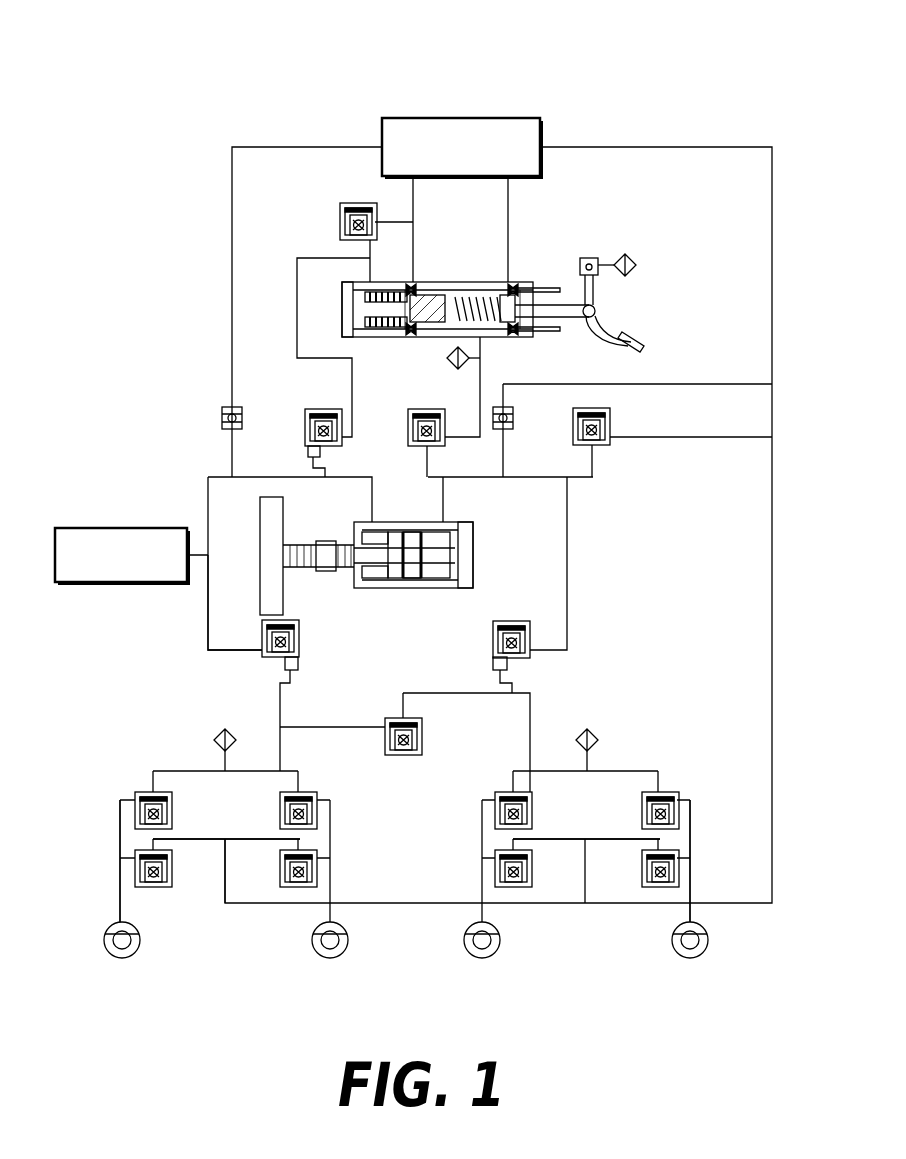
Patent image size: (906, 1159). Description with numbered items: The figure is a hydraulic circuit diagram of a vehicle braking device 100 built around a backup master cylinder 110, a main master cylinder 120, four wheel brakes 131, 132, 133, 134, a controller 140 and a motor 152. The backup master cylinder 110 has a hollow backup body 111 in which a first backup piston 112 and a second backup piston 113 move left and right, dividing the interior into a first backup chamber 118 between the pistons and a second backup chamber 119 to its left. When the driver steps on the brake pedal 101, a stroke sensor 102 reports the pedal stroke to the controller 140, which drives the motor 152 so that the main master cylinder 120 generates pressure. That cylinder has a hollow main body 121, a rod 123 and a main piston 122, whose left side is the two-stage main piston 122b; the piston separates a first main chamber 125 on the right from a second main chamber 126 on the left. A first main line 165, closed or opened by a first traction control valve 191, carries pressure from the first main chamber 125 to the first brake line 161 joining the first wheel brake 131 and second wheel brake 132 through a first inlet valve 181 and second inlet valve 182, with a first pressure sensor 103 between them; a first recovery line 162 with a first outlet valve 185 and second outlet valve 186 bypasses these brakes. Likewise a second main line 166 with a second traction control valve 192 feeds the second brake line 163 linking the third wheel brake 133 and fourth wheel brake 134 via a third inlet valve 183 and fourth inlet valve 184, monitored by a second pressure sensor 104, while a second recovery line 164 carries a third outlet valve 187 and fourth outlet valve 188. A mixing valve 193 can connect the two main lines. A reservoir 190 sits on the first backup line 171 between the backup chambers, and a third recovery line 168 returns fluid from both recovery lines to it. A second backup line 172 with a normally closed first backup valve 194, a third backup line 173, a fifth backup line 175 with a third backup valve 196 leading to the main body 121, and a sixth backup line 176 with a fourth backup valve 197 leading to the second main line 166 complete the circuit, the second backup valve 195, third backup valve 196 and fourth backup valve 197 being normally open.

The vehicle braking device 100 is at (154, 50).
The brake pedal 101 is at (604, 326).
The stroke sensor 102 is at (626, 254).
The first pressure sensor 103 is at (594, 734).
The second pressure sensor 104 is at (218, 730).
The backup master cylinder 110 is at (468, 267).
The backup body 111 is at (483, 295).
The first backup piston 112 is at (553, 296).
The second backup piston 113 is at (422, 294).
The first backup chamber 118 is at (460, 294).
The second backup chamber 119 is at (375, 292).
The main master cylinder 120 is at (446, 566).
The main body 121 is at (390, 530).
The main piston 122 is at (414, 532).
The two-stage main piston 122b is at (400, 600).
The rod 123 is at (296, 543).
The first main chamber 125 is at (446, 596).
The second main chamber 126 is at (370, 588).
The first wheel brake 131 is at (498, 950).
The second wheel brake 132 is at (672, 950).
The third wheel brake 133 is at (138, 950).
The fourth wheel brake 134 is at (312, 950).
The controller 140 is at (144, 526).
The motor 152 is at (260, 520).
The first brake line 161 is at (691, 842).
The first recovery line 162 is at (541, 839).
The second brake line 163 is at (120, 836).
The second recovery line 164 is at (180, 839).
The first main line 165 is at (567, 606).
The second main line 166 is at (208, 629).
The third recovery line 168 is at (608, 147).
The first backup line 171 is at (515, 214).
The second backup line 172 is at (378, 222).
The third backup line 173 is at (320, 147).
The fifth backup line 175 is at (480, 367).
The sixth backup line 176 is at (297, 284).
The first inlet valve 181 is at (505, 792).
The second inlet valve 182 is at (668, 792).
The third inlet valve 183 is at (142, 792).
The fourth inlet valve 184 is at (306, 792).
The first outlet valve 185 is at (511, 888).
The second outlet valve 186 is at (660, 888).
The third outlet valve 187 is at (150, 888).
The fourth outlet valve 188 is at (298, 888).
The reservoir 190 is at (473, 114).
The first traction control valve 191 is at (530, 652).
The second traction control valve 192 is at (262, 656).
The mixing valve 193 is at (403, 755).
The first backup valve 194 is at (340, 222).
The second backup valve 195 is at (609, 420).
The third backup valve 196 is at (426, 408).
The fourth backup valve 197 is at (308, 419).